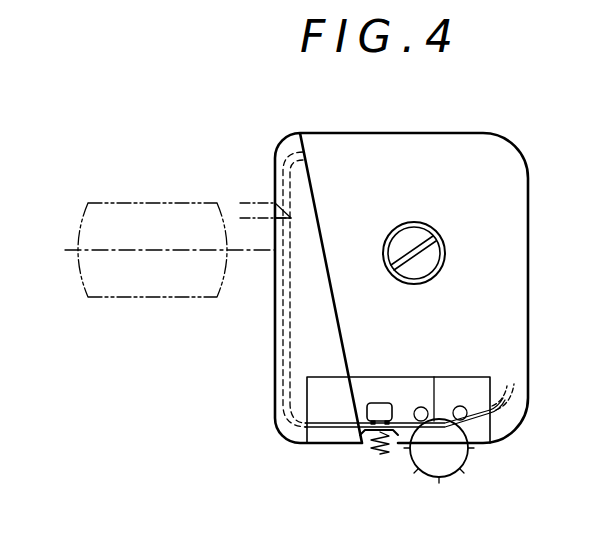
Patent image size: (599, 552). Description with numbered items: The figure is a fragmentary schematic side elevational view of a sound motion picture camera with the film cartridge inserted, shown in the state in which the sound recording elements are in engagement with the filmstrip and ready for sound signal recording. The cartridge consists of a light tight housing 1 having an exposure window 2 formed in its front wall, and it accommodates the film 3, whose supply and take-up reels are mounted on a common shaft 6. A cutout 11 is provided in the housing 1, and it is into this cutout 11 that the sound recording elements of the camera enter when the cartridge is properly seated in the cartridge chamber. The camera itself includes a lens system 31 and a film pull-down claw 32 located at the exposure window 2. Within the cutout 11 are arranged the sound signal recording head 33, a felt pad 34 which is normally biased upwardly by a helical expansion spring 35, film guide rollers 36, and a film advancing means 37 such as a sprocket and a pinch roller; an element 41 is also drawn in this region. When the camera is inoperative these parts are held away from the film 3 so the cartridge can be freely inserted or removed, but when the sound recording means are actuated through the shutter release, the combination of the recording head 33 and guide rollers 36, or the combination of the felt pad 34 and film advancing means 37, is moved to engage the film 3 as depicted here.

The light tight housing 1 is at (432, 156).
The exposure window 2 is at (277, 268).
The film 3 is at (333, 423).
The common shaft 6 is at (413, 240).
The cutout 11 is at (447, 390).
The lens system 31 is at (161, 284).
The film pull-down claw 32 is at (247, 199).
The sound signal recording head 33 is at (380, 405).
The felt pad 34 is at (372, 433).
The helical expansion spring 35 is at (382, 441).
The film guide rollers 36 is at (468, 407).
The film advancing means 37 is at (450, 470).
The partition wall 41 is at (434, 380).